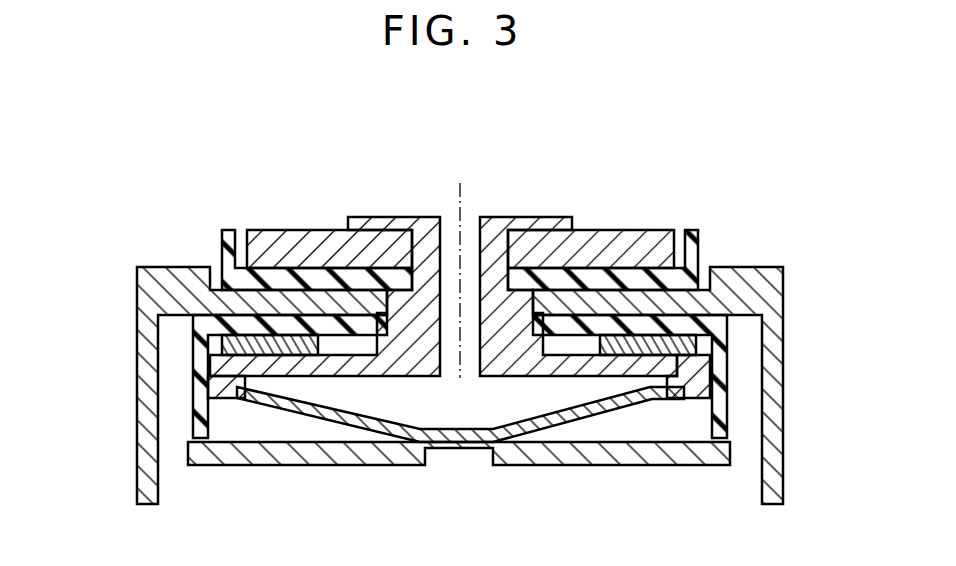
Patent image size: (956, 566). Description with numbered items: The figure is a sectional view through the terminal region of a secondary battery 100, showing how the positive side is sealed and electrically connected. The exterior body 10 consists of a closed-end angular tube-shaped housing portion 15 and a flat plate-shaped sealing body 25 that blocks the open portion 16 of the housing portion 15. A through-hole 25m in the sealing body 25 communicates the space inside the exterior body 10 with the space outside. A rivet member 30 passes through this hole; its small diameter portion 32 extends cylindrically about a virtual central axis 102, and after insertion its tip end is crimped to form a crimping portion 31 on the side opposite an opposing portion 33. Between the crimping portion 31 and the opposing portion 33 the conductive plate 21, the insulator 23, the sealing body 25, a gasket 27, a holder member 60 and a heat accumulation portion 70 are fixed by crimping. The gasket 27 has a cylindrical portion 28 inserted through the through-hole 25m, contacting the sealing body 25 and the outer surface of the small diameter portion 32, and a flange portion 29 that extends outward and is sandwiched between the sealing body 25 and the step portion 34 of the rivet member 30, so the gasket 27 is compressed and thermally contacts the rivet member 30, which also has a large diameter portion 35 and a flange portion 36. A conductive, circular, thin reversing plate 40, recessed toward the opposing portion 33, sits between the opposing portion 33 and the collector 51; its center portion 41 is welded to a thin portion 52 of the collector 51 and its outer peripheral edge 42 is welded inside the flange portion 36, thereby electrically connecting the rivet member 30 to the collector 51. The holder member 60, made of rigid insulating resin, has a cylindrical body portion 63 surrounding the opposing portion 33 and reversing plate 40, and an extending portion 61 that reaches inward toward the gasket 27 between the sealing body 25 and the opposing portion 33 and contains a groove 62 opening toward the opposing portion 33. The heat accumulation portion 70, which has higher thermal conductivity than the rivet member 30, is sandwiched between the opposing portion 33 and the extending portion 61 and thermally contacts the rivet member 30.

The secondary battery 100 is at (742, 123).
The virtual central axis 102 is at (464, 188).
The exterior body 10 is at (783, 254).
The housing portion 15 is at (784, 418).
The open portion 16 is at (163, 288).
The conductive plate 21 is at (649, 245).
The insulator 23 is at (691, 240).
The sealing body 25 is at (190, 282).
The through-hole 25m is at (520, 306).
The gasket 27 is at (275, 164).
The cylindrical portion 28 is at (373, 312).
The flange portion 29 is at (330, 308).
The rivet member 30 is at (412, 203).
The crimping portion 31 is at (523, 226).
The small diameter portion 32 is at (403, 305).
The opposing portion 33 is at (278, 325).
The step portion 34 is at (449, 322).
The large diameter portion 35 is at (230, 325).
The flange portion 36 is at (215, 386).
The reversing plate 40 is at (320, 432).
The center portion 41 is at (430, 444).
The outer peripheral edge 42 is at (241, 396).
The collector 51 is at (674, 476).
The thin portion 52 is at (459, 450).
The holder member 60 is at (180, 394).
The extending portion 61 is at (642, 320).
The groove 62 is at (692, 340).
The body portion 63 is at (692, 351).
The heat accumulation portion 70 is at (612, 317).